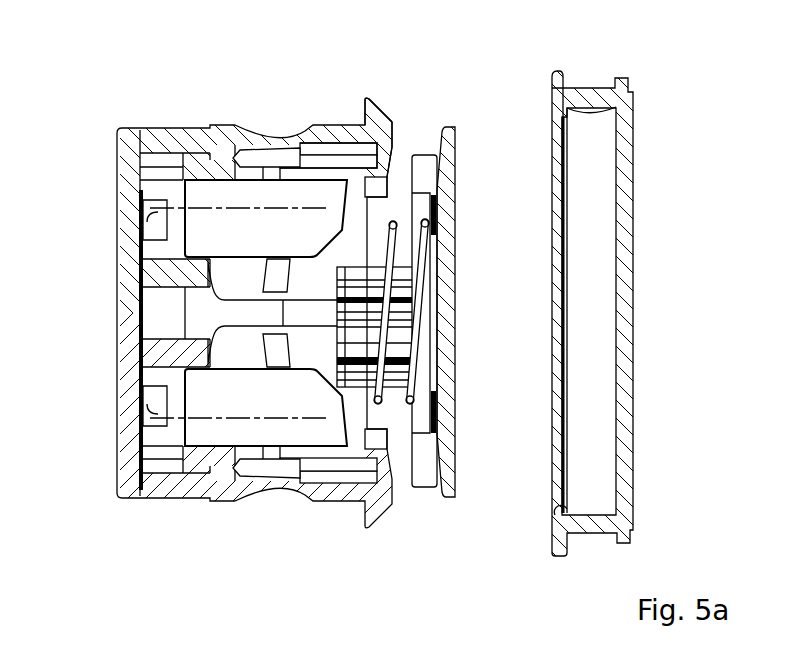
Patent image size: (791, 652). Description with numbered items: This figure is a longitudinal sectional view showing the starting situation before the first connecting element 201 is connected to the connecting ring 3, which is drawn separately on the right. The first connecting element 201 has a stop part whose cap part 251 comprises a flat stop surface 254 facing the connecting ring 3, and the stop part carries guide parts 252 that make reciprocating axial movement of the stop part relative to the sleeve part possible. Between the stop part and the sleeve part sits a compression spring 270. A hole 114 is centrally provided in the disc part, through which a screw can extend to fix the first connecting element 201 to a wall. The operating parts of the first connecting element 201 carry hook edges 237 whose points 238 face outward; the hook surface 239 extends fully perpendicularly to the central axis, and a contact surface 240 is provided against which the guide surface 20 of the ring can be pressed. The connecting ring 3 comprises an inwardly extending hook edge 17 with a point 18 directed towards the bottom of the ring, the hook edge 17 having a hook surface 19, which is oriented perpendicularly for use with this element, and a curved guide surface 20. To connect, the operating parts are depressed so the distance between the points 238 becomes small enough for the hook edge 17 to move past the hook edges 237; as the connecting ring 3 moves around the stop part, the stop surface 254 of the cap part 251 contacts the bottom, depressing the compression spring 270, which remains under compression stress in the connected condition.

The first connecting element 201 is at (88, 132).
The connecting ring 3 is at (513, 87).
The hole 114 is at (127, 302).
The hook edge 237 is at (373, 112).
The point 238 is at (366, 100).
The hook surface 239 is at (363, 118).
The contact surface 240 is at (388, 118).
The cap part 251 is at (448, 333).
The guide parts 252 is at (383, 292).
The compression spring 270 is at (425, 297).
The stop surface 254 is at (457, 358).
The hook edge 17 is at (560, 121).
The point 18 is at (568, 122).
The hook surface 19 is at (568, 116).
The guide surface 20 is at (558, 123).